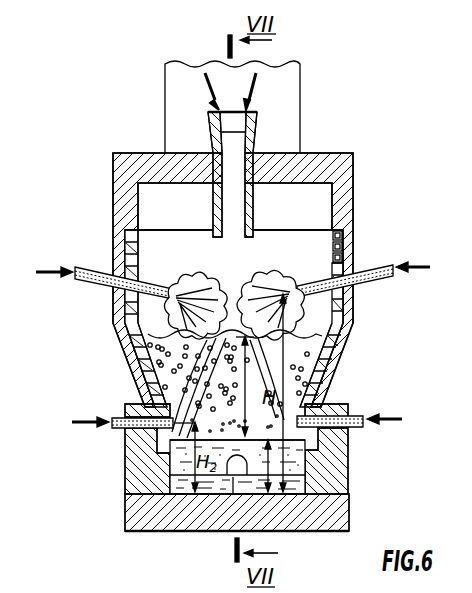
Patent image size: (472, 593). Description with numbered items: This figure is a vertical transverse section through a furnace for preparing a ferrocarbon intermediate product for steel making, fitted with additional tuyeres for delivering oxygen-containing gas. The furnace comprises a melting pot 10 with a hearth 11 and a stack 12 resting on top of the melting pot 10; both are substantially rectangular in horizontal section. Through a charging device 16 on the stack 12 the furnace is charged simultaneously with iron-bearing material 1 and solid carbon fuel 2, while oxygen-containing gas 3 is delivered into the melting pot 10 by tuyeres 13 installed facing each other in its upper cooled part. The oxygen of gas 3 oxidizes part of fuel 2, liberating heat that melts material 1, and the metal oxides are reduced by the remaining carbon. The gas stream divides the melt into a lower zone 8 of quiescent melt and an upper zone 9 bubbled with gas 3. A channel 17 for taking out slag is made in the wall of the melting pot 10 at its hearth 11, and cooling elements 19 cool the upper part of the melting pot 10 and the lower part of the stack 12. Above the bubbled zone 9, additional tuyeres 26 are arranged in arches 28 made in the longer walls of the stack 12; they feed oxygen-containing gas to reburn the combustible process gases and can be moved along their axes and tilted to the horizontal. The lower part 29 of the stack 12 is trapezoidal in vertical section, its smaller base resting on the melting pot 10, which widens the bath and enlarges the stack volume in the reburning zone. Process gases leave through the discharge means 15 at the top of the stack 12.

The iron-bearing material 1 is at (203, 91).
The solid carbon fuel 2 is at (257, 91).
The oxygen-containing gas 3 is at (231, 340).
The lower zone of the quiescent melt 8 is at (260, 466).
The upper zone of the melt bubbled with gas 9 is at (241, 386).
The melting pot 10 is at (338, 471).
The hearth 11 is at (319, 512).
The stack 12 is at (345, 211).
The tuyeres 13 is at (110, 435).
The means for discharging the process gases 15 is at (283, 125).
The device for charging 16 is at (214, 139).
The channel for taking out slag 17 is at (233, 494).
The cooling elements 19 is at (329, 393).
The additional tuyeres 26 is at (80, 284).
The arches 28 is at (118, 293).
The lower part of the stack 29 is at (133, 348).